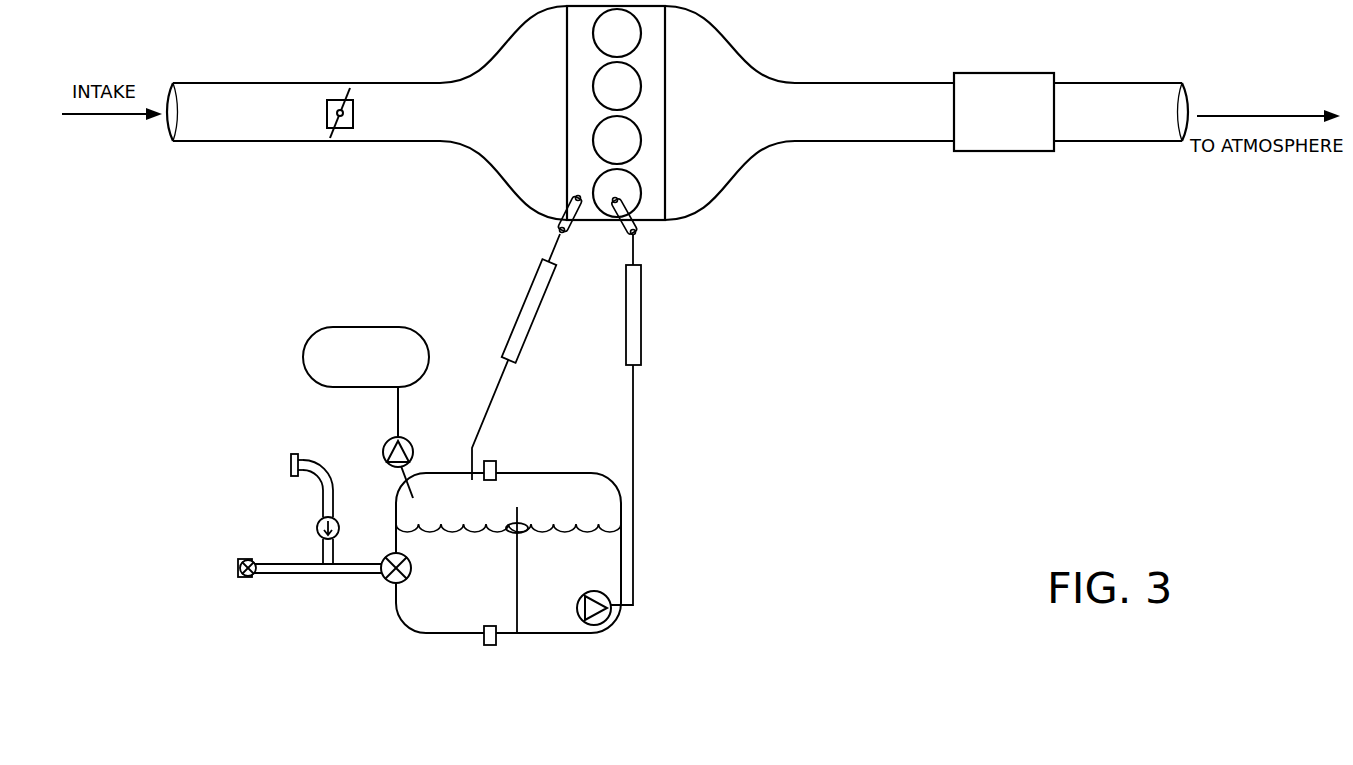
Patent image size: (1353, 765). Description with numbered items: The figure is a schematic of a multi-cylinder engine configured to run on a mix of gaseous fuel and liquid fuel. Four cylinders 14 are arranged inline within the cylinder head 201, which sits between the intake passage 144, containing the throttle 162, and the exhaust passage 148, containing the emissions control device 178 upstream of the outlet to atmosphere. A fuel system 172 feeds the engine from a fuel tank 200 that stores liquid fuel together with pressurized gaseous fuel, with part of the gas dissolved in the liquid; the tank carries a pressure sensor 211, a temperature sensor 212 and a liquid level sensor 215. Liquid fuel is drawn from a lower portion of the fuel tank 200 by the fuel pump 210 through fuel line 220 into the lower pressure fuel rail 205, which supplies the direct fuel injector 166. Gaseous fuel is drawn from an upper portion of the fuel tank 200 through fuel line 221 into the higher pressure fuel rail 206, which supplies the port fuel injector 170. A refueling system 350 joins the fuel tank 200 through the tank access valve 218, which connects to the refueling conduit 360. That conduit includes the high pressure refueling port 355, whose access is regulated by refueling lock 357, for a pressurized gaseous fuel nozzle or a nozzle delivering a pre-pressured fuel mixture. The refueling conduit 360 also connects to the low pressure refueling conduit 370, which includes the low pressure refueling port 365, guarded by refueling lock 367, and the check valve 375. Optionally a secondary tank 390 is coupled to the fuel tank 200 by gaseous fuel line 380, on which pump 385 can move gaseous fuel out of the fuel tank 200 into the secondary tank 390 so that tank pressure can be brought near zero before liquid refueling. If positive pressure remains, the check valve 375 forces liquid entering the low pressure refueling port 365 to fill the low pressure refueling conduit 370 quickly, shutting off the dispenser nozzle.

The cylinders 14 is at (637, 183).
The intake passage 144 is at (367, 113).
The exhaust passage 148 is at (926, 113).
The throttle 162 is at (352, 121).
The direct fuel injector 166 is at (638, 221).
The port fuel injector 170 is at (556, 218).
The fuel system 172 is at (355, 250).
The emissions control device 178 is at (1004, 112).
The fuel tank 200 is at (403, 619).
The cylinder head 201 is at (665, 95).
The fuel rail 205 is at (627, 360).
The fuel rail 206 is at (504, 338).
The fuel pump 210 is at (586, 627).
The pressure sensor 211 is at (497, 466).
The temperature sensor 212 is at (484, 643).
The liquid level sensor 215 is at (520, 509).
The tank access valve 218 is at (386, 580).
The fuel line 220 is at (632, 418).
The fuel line 221 is at (481, 416).
The refueling system 350 is at (246, 380).
The high pressure refueling port 355 is at (256, 563).
The refueling lock 357 is at (238, 578).
The refueling conduit 360 is at (292, 574).
The low pressure refueling port 365 is at (298, 455).
The refueling lock 367 is at (303, 471).
The low pressure refueling conduit 370 is at (322, 500).
The check valve 375 is at (340, 527).
The gaseous fuel line 380 is at (398, 402).
The pump 385 is at (385, 452).
The secondary tank 390 is at (366, 357).